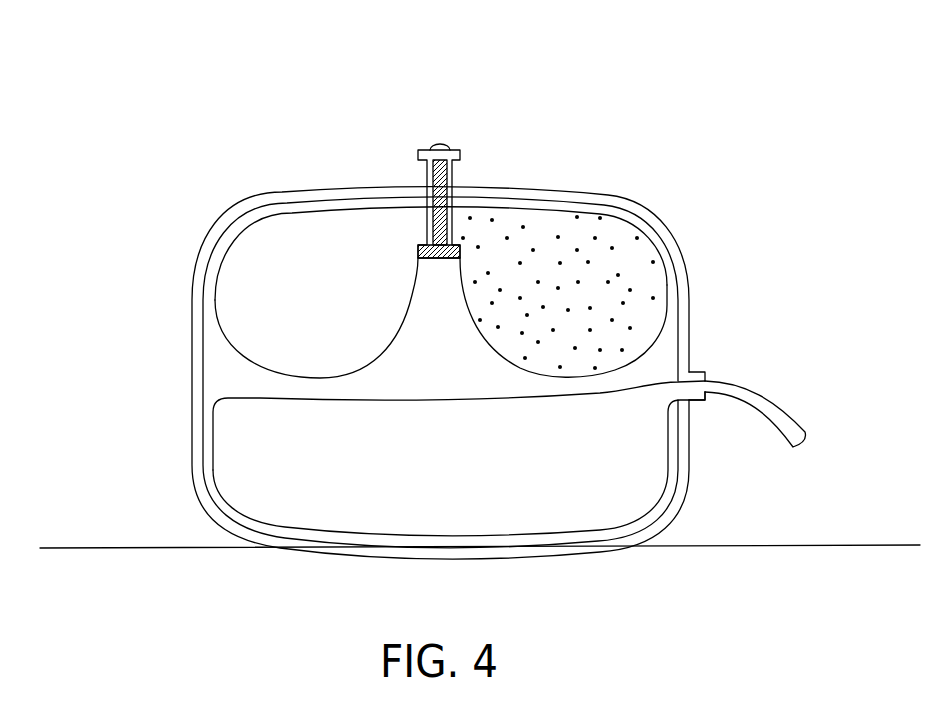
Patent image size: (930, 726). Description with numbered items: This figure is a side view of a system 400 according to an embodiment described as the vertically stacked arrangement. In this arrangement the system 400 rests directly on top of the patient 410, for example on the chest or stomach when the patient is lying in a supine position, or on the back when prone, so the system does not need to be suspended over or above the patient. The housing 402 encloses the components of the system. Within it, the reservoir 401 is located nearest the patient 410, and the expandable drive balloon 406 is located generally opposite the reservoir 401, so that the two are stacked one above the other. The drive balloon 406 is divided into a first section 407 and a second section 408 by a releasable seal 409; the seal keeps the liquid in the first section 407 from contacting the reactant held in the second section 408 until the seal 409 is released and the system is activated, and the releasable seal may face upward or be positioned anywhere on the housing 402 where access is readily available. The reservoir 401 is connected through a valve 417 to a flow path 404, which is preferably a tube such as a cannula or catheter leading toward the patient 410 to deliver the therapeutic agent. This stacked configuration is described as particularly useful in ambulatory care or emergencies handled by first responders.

The system 400 is at (145, 95).
The reservoir 401 is at (431, 469).
The outer housing 402 is at (567, 190).
The tube 404 is at (750, 388).
The expandable drive balloon 406 is at (228, 340).
The left chamber 407 is at (237, 293).
The right chamber with particulate 408 is at (642, 280).
The stem / plunger 409 is at (455, 150).
The patient 410 is at (142, 546).
The port 417 is at (698, 372).